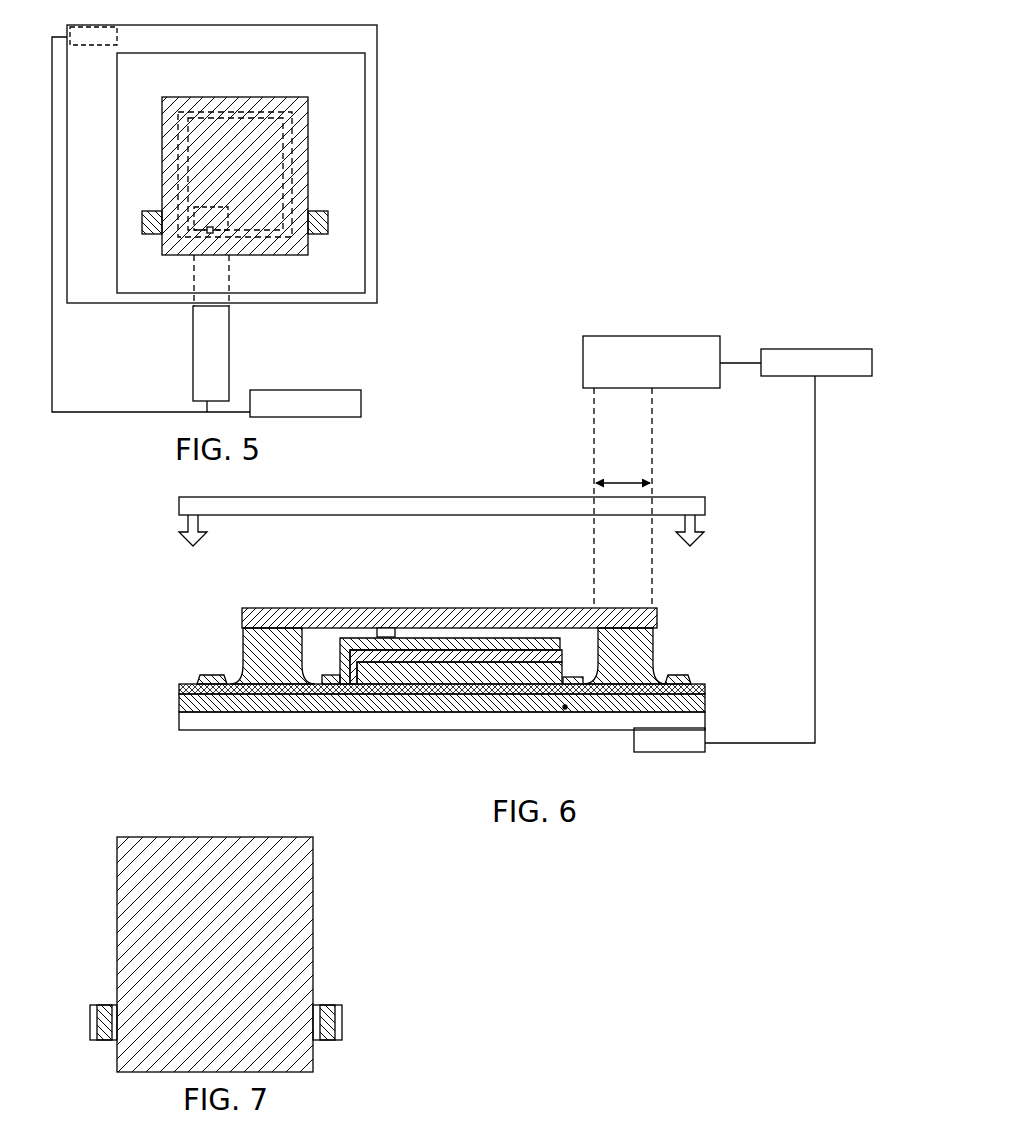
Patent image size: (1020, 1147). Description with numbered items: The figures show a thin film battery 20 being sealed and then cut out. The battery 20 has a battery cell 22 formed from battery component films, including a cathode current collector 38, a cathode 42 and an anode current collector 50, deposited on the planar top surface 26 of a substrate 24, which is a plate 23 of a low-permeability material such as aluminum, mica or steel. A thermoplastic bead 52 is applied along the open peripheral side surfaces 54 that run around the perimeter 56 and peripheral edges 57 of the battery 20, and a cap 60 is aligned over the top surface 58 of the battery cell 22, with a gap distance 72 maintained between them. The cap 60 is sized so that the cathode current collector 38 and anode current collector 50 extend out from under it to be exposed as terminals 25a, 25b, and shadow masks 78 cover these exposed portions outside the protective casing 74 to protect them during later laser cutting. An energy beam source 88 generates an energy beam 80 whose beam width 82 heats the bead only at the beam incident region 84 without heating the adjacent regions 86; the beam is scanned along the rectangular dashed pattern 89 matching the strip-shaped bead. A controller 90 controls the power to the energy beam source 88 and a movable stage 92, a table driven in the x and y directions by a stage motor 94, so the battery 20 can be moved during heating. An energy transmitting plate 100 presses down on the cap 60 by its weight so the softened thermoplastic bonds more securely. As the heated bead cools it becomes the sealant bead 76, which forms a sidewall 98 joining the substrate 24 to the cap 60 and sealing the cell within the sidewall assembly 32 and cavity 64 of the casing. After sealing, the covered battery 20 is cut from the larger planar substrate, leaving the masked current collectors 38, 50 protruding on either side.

In FIG. 5, the thin film battery 20 is at (392, 50).
In FIG. 6, the thin film battery 20 is at (723, 557).
In FIG. 7, the thin film battery 20 is at (300, 810).
In FIG. 5, the battery cell 22 is at (235, 176).
In FIG. 6, the battery cell 22 is at (452, 635).
In FIG. 6, the plate 23 is at (707, 702).
In FIG. 5, the substrate 24 is at (241, 173).
In FIG. 6, the substrate 24 is at (407, 710).
In FIG. 5, the terminal 25a is at (145, 198).
In FIG. 5, the terminal 25b is at (342, 213).
In FIG. 7, the top surface 26 is at (215, 954).
In FIG. 6, the sidewall assembly 32 is at (728, 625).
In FIG. 5, the cathode current collector 38 is at (328, 230).
In FIG. 6, the cathode current collector 38 is at (707, 690).
In FIG. 7, the cathode current collector 38 is at (340, 1023).
In FIG. 6, the cathode 42 is at (459, 671).
In FIG. 5, the anode current collector 50 is at (142, 228).
In FIG. 6, the anode current collector 50 is at (180, 688).
In FIG. 7, the anode current collector 50 is at (90, 1020).
In FIG. 5, the thermoplastic bead 52 is at (308, 110).
In FIG. 6, the thermoplastic bead 52 is at (652, 650).
In FIG. 6, the open peripheral side surfaces 54 is at (238, 648).
In FIG. 5, the perimeter 56 is at (258, 122).
In FIG. 6, the perimeter 56 is at (680, 660).
In FIG. 6, the peripheral edges 57 is at (565, 709).
In FIG. 6, the top surface 58 is at (393, 637).
In FIG. 5, the cap 60 is at (220, 97).
In FIG. 6, the cap 60 is at (373, 607).
In FIG. 6, the cavity 64 is at (573, 637).
In FIG. 6, the gap distance 72 is at (367, 637).
In FIG. 5, the protective casing 74 is at (312, 132).
In FIG. 6, the protective casing 74 is at (680, 642).
In FIG. 7, the protective casing 74 is at (313, 902).
In FIG. 5, the sealant bead 76 is at (288, 157).
In FIG. 6, the sealant bead 76 is at (448, 656).
In FIG. 5, the shadow mask 78 is at (142, 214).
In FIG. 6, the shadow mask 78 is at (200, 677).
In FIG. 7, the shadow mask 78 is at (110, 1005).
In FIG. 5, the energy beam 80 is at (193, 263).
In FIG. 6, the energy beam 80 is at (652, 443).
In FIG. 6, the beam width 82 is at (628, 483).
In FIG. 5, the beam incident region 84 is at (209, 240).
In FIG. 6, the beam incident region 84 is at (627, 605).
In FIG. 5, the adjacent regions 86 is at (237, 237).
In FIG. 6, the adjacent regions 86 is at (580, 603).
In FIG. 5, the energy beam source 88 is at (229, 333).
In FIG. 6, the energy beam source 88 is at (668, 336).
In FIG. 5, the scan boundary 89 is at (292, 172).
In FIG. 5, the controller 90 is at (313, 390).
In FIG. 6, the controller 90 is at (800, 349).
In FIG. 5, the movable stage 92 is at (377, 218).
In FIG. 6, the movable stage 92 is at (180, 718).
In FIG. 5, the stage motor 94 is at (88, 47).
In FIG. 6, the stage motor 94 is at (688, 752).
In FIG. 5, the sidewall 98 is at (277, 240).
In FIG. 6, the sidewall 98 is at (238, 680).
In FIG. 6, the energy transmitting plate 100 is at (470, 497).